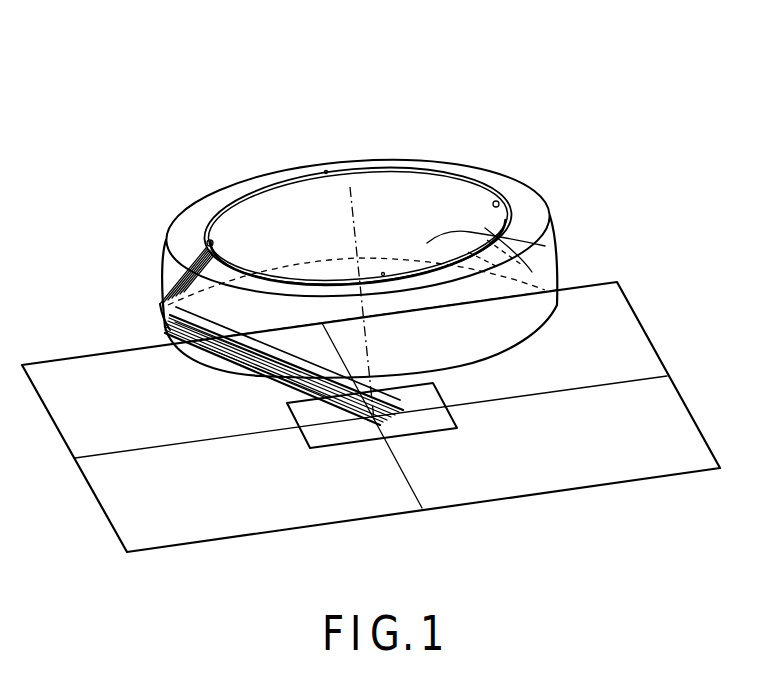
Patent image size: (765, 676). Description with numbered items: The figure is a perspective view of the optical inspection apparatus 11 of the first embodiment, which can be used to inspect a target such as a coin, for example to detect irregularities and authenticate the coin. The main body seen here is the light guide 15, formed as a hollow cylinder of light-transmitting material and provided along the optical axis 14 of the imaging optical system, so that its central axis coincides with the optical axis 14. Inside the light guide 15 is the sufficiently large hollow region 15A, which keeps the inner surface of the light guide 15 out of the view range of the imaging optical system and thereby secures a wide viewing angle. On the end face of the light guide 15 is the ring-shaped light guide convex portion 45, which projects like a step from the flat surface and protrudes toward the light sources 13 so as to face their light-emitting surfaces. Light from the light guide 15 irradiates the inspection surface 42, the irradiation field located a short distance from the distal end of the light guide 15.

The optical inspection apparatus 11 is at (368, 221).
The light sources 13 is at (313, 233).
The optical axis 14 is at (330, 303).
The light guide 15 is at (389, 263).
The hollow region 15A is at (518, 244).
The inspection surface 42 is at (372, 435).
The light guide convex portion 45 is at (356, 217).